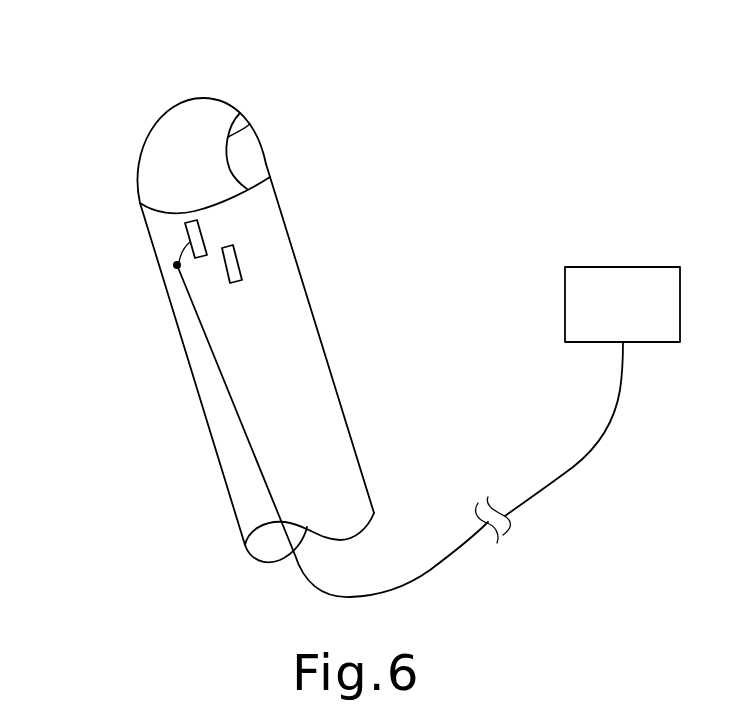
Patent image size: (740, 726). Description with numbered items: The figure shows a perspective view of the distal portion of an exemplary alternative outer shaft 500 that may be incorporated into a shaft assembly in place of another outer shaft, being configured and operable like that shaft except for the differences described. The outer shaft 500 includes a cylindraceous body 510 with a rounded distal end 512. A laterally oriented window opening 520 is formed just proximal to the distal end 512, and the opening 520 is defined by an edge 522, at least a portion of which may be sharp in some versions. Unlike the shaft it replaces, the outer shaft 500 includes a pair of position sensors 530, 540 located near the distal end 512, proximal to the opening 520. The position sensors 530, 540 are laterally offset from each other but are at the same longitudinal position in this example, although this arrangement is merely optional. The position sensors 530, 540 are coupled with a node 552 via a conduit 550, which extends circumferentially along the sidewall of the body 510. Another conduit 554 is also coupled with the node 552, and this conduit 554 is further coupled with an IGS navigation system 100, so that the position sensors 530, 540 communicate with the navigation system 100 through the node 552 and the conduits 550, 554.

The IGS navigation system 100 is at (645, 315).
The outer shaft 500 is at (390, 62).
The cylindraceous body 510 is at (316, 364).
The rounded distal end 512 is at (187, 115).
The window opening 520 is at (266, 158).
The edge 522 is at (250, 123).
The position sensor 530 is at (178, 266).
The position sensor 540 is at (188, 234).
The conduit 550 is at (176, 265).
The node 552 is at (175, 277).
The conduit 554 is at (227, 372).